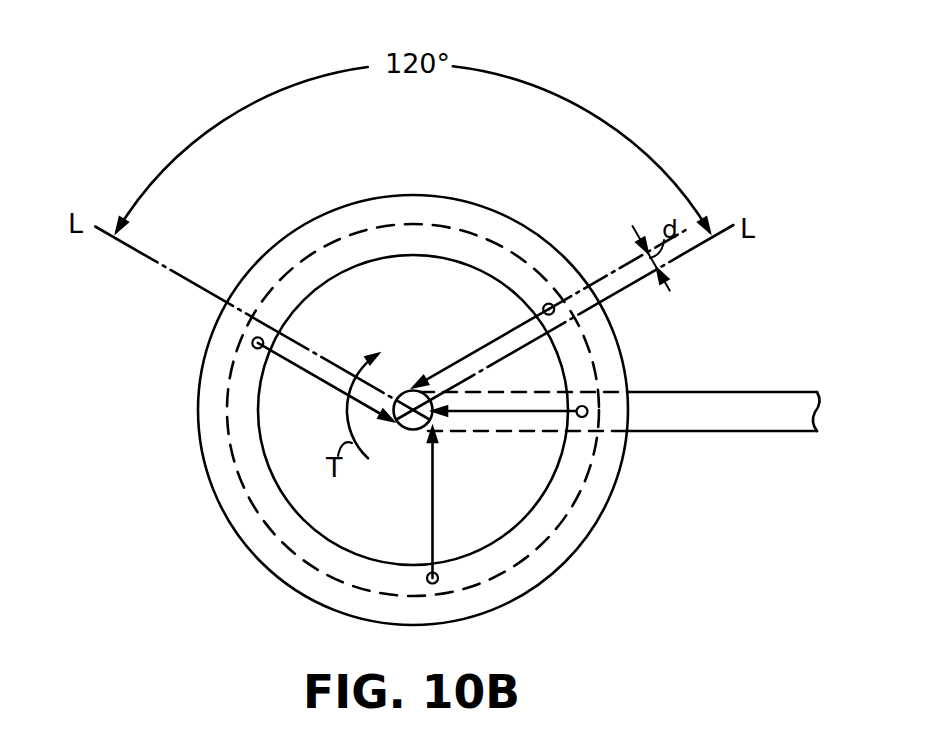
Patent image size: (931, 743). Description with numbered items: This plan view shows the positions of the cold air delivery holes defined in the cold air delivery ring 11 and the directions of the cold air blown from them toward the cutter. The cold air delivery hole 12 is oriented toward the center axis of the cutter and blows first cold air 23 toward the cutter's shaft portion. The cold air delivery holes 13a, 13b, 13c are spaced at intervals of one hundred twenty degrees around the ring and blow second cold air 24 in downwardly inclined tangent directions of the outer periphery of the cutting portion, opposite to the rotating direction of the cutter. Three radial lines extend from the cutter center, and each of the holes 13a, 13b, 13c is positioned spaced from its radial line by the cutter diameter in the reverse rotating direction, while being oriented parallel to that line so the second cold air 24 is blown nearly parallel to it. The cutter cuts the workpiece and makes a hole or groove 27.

The cold air delivery ring 11 is at (601, 515).
The cold air delivery hole 12 is at (586, 407).
The cold air delivery hole 13a is at (549, 303).
The cold air delivery hole 13b is at (252, 344).
The cold air delivery hole 13c is at (438, 574).
The first cold air 23 is at (510, 431).
The second cold air 24 is at (482, 348).
The hole or groove 27 is at (753, 403).